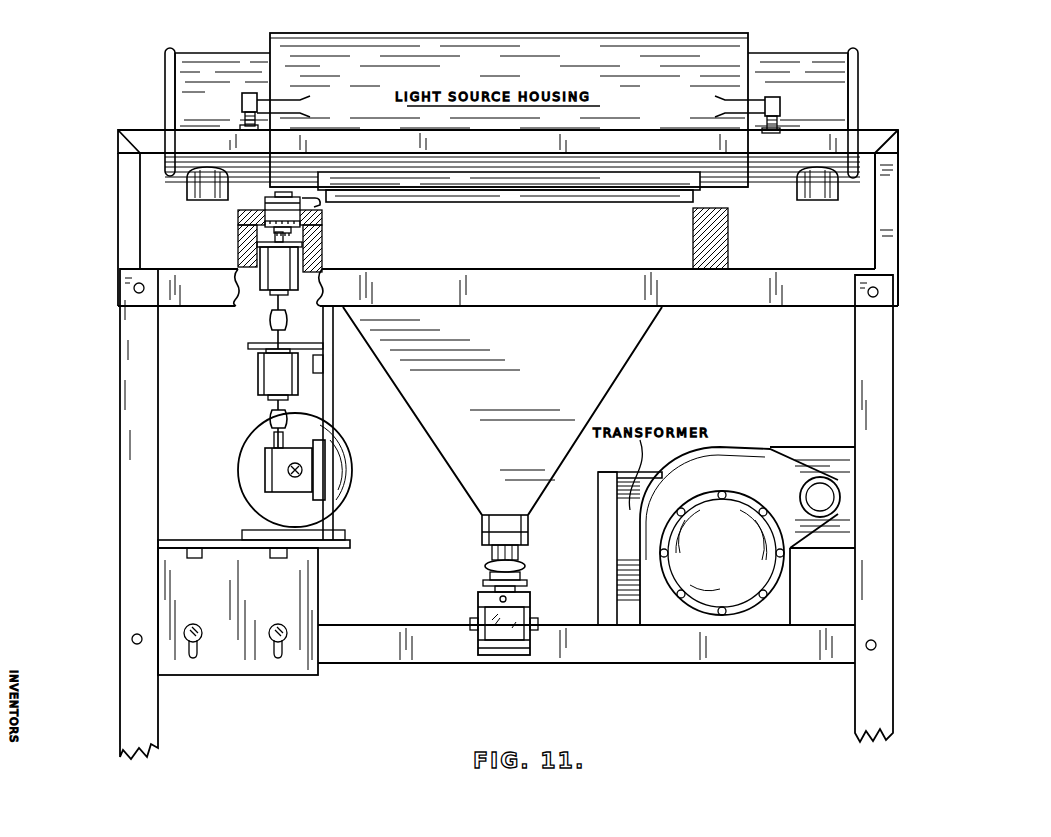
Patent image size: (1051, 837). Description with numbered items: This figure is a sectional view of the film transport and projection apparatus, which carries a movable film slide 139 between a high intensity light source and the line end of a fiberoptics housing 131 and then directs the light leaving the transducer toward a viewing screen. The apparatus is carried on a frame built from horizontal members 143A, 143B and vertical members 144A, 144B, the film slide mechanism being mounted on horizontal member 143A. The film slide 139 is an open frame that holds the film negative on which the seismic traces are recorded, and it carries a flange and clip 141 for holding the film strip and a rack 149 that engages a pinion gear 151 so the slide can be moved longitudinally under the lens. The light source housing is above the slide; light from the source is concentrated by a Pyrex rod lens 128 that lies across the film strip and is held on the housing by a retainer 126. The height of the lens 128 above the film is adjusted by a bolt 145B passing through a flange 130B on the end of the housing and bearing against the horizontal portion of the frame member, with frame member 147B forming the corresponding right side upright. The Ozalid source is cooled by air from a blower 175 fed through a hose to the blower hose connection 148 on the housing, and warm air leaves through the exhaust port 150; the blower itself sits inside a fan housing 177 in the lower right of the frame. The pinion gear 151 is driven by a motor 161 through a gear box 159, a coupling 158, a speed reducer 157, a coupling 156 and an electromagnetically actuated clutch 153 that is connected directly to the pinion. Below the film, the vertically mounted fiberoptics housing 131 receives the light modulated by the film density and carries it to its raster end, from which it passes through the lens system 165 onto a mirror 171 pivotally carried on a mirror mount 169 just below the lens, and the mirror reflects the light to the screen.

The retainer 126 is at (463, 180).
The Pyrex rod lens 128 is at (620, 194).
The flange 130B is at (290, 100).
The fiberoptics housing 131 is at (525, 399).
The film slide 139 is at (280, 200).
The clip 141 is at (310, 200).
The horizontal member 143A is at (788, 278).
The horizontal member 143B is at (767, 652).
The vertical member 144A is at (875, 338).
The vertical member 144B is at (143, 335).
The bolt 145B is at (245, 118).
The frame member 147B is at (883, 171).
The blower hose connection 148 is at (827, 190).
The rack 149 is at (302, 224).
The exhaust port 150 is at (197, 189).
The pinion gear 151 is at (247, 224).
The electromagnetically actuated clutch 153 is at (283, 268).
The coupling 156 is at (275, 318).
The speed reducer 157 is at (273, 375).
The coupling 158 is at (277, 417).
The gear box 159 is at (270, 465).
The motor 161 is at (340, 465).
The lens system 165 is at (487, 563).
The mirror mount 169 is at (532, 598).
The mirror 171 is at (500, 626).
The blower 175 is at (912, 428).
The fan housing 177 is at (903, 593).